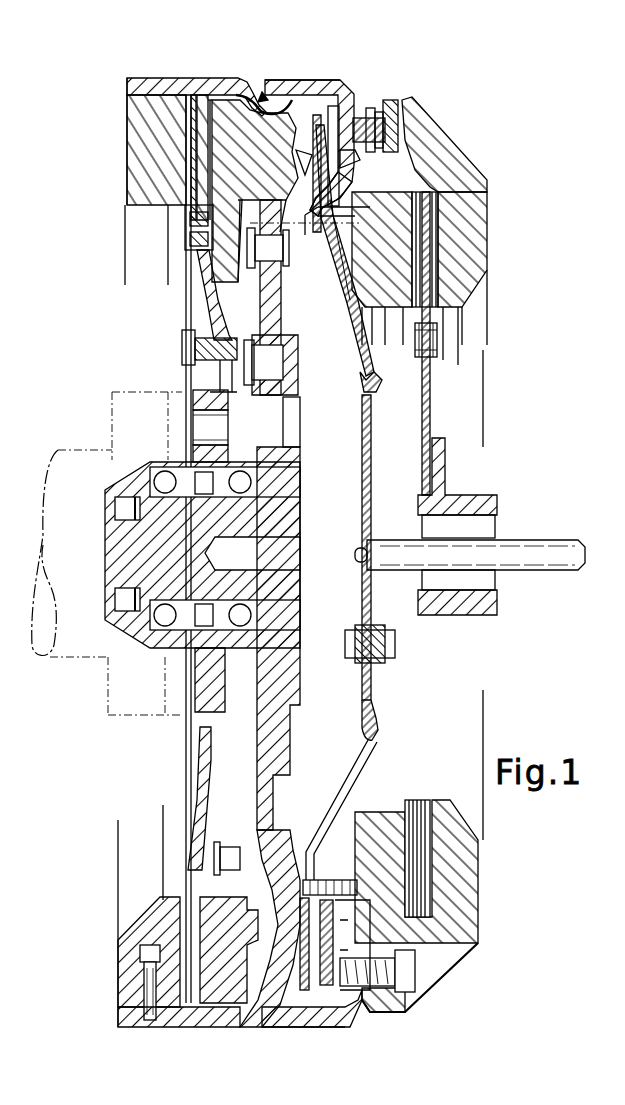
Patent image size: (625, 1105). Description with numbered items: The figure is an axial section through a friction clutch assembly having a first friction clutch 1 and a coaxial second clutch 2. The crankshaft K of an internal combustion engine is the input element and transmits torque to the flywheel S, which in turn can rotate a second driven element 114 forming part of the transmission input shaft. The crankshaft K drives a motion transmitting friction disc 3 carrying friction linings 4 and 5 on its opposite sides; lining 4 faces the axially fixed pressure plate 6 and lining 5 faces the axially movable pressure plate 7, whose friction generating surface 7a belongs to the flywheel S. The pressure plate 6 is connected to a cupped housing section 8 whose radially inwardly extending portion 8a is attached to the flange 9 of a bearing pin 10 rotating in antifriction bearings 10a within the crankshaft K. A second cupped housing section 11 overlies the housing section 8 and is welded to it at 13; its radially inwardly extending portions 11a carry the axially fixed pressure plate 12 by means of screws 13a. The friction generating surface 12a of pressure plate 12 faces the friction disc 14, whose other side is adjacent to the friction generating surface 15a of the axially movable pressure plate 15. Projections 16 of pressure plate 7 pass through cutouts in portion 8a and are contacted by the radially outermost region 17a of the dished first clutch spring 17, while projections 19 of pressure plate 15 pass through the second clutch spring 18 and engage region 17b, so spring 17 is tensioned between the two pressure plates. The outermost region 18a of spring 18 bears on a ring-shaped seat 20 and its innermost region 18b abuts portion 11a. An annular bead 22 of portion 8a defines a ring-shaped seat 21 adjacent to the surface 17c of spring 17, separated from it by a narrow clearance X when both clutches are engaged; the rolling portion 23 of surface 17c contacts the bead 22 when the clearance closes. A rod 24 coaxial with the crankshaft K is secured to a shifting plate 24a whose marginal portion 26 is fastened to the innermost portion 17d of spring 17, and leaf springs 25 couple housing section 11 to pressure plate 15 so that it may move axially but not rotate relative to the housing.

The first friction clutch 1 is at (176, 41).
The second clutch 2 is at (323, 33).
The motion transmitting friction disc 3 is at (203, 303).
The friction lining 4 is at (188, 173).
The friction lining 5 is at (195, 203).
The axially fixed pressure plate 6 is at (137, 127).
The axially movable pressure plate 7 is at (225, 127).
The friction generating surface 7a is at (213, 110).
The cupped housing section 8 is at (152, 83).
The radially inwardly extending portion 8a is at (277, 112).
The flange 9 is at (298, 697).
The bearing pin 10 is at (172, 547).
The antifriction bearing 10a is at (160, 648).
The second cupped housing section 11 is at (293, 92).
The radially inwardly extending portion 11a is at (357, 200).
The pressure plate 12 is at (467, 243).
The friction generating surface 12a is at (451, 271).
The weld 13 is at (250, 1023).
The screws 13a is at (415, 983).
The friction disc 14 is at (432, 385).
The axially movable pressure plate 15 is at (383, 228).
The friction generating surface 15a is at (407, 250).
The projections 16 is at (247, 92).
The first clutch spring 17 is at (372, 352).
The radially outermost region 17a is at (317, 127).
The region 17b is at (278, 285).
The side or surface 17c is at (338, 302).
The radially innermost portion 17d is at (362, 373).
The second clutch spring 18 is at (390, 128).
The radially outermost region 18a is at (373, 122).
The radially innermost region 18b is at (393, 148).
The projections 19 is at (450, 203).
The ring-shaped seat 20 is at (340, 120).
The ring-shaped fulcrum or seat 21 is at (313, 233).
The annular bead 22 is at (316, 167).
The rolling portion 23 is at (258, 172).
The bar or rod 24 is at (533, 553).
The shifting or moving plate 24a is at (385, 607).
The leaf springs 25 is at (385, 130).
The marginal portion 26 is at (378, 724).
The second driven element 114 is at (470, 503).
The crankshaft K is at (17, 565).
The flywheel S is at (254, 1061).
The clearance or gap X is at (302, 891).